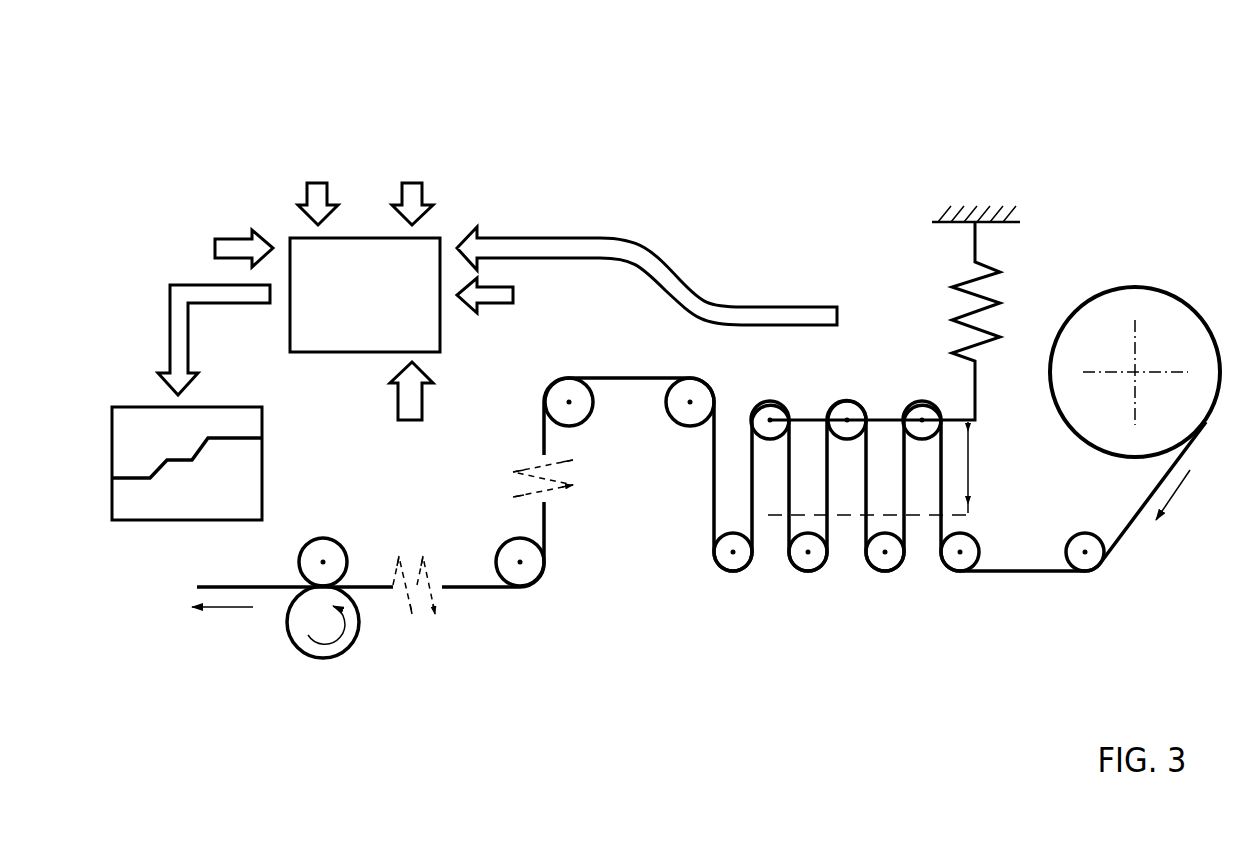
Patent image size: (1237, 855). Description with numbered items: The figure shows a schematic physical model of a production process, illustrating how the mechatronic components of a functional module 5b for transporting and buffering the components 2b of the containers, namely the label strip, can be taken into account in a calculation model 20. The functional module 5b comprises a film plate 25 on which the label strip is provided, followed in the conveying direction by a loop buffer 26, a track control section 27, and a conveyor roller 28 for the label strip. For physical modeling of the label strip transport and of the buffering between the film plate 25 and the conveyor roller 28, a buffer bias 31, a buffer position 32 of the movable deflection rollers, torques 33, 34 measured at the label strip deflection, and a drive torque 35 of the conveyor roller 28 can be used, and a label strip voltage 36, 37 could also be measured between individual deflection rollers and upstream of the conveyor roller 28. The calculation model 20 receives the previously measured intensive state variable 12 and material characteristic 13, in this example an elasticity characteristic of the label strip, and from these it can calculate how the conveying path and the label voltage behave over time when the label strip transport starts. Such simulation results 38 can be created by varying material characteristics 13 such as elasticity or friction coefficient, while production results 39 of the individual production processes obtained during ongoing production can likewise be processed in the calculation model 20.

The intensive state variable 12 is at (318, 186).
The material characteristic 13 is at (412, 186).
The calculation model 20 is at (376, 307).
The film plate 25 is at (1191, 311).
The loop buffer 26 is at (847, 586).
The track control section 27 is at (634, 587).
The conveyor roller 28 is at (323, 661).
The component 2b is at (1020, 574).
The buffer bias 31 is at (944, 315).
The buffer position 32 is at (970, 467).
The torque 33 is at (567, 362).
The torque 34 is at (524, 590).
The drive torque 35 is at (351, 643).
The label strip voltage 36 is at (494, 473).
The label strip voltage 37 is at (414, 546).
The simulation results 38 is at (121, 406).
The production results 39 is at (225, 248).
The functional module 5b is at (791, 269).